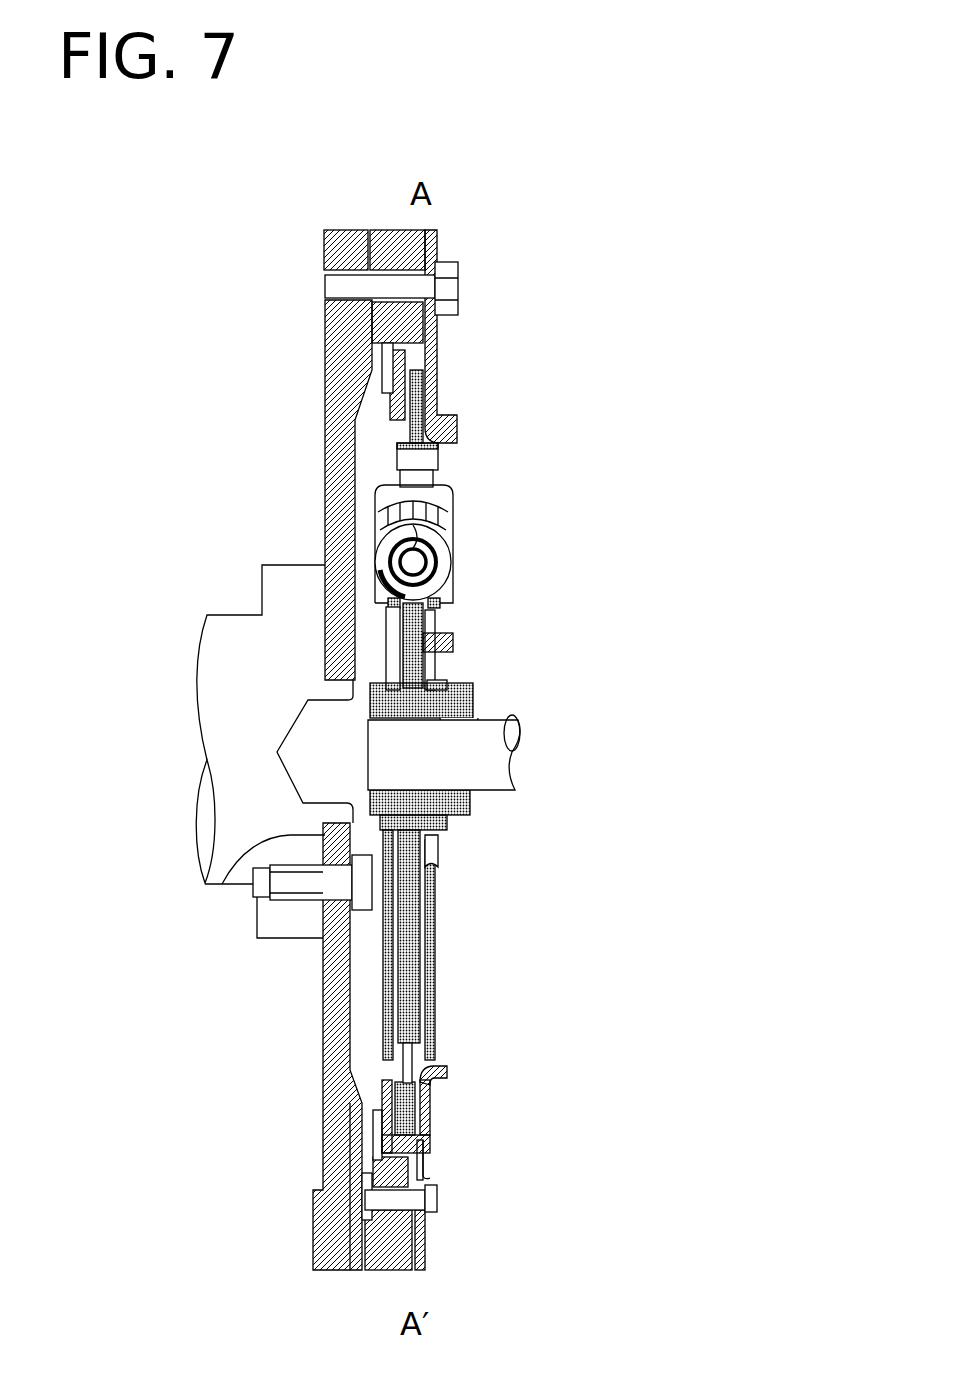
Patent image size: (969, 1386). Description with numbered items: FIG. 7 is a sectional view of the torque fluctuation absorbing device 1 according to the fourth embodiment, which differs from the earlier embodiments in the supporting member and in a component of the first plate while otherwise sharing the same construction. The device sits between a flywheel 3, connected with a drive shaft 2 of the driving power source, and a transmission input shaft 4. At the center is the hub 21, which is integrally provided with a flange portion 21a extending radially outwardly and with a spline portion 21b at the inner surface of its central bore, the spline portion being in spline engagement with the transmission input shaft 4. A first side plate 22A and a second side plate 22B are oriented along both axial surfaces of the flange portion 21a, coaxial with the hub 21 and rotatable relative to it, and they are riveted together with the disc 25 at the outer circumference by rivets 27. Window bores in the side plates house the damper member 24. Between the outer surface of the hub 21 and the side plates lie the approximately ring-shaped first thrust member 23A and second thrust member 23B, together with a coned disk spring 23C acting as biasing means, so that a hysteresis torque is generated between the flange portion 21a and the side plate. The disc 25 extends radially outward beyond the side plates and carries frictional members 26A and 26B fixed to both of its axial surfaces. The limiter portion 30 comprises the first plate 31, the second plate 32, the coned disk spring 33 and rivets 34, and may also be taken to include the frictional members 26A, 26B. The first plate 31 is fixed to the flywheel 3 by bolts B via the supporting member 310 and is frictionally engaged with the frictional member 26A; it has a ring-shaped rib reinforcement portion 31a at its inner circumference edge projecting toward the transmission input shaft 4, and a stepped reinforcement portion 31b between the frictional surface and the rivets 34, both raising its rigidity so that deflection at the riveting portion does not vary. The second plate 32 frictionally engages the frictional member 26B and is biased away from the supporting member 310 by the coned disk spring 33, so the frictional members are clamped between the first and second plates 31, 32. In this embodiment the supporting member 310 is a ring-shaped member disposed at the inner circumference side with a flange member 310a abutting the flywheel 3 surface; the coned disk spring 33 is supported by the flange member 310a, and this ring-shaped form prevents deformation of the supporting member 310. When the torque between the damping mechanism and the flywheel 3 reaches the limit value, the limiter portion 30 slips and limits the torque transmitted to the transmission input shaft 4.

The torque fluctuation absorbing device 1 is at (700, 266).
The drive shaft 2 is at (207, 665).
The flywheel 3 is at (317, 1250).
The transmission input shaft 4 is at (505, 777).
The hub 21 is at (462, 694).
The flange portion 21a is at (435, 917).
The spline portion 21b is at (478, 717).
The first side plate 22A is at (410, 487).
The second side plate 22B is at (445, 483).
The first thrust member 23A is at (207, 888).
The second thrust member 23B is at (450, 830).
The coned disk spring 23C is at (440, 875).
The damper member 24 is at (445, 557).
The disc 25 is at (430, 440).
The frictional member 26A is at (420, 373).
The frictional member 26B is at (390, 398).
The rivets 27 is at (393, 457).
The limiter portion 30 is at (420, 1158).
The first plate 31 is at (420, 1250).
The reinforcement portion 31a is at (504, 1059).
The reinforcement portion 31b is at (433, 1173).
The second plate 32 is at (383, 1095).
The coned disk spring 33 is at (380, 1126).
The rivets 34 is at (427, 1200).
The supporting member 310 is at (327, 258).
The flange member 310a is at (345, 1157).
The bolts B is at (420, 288).